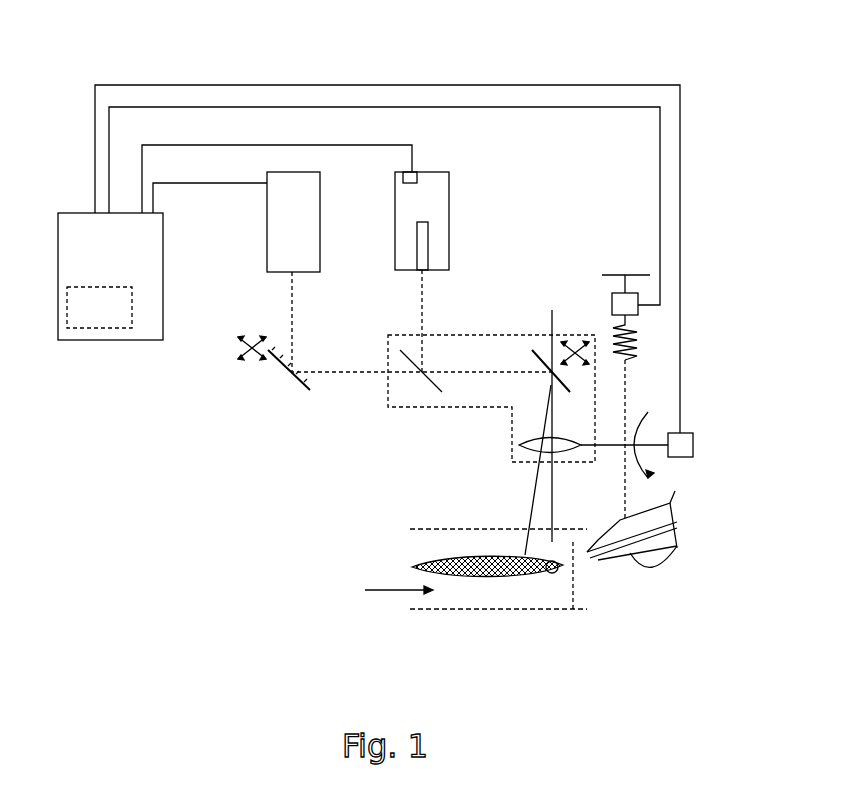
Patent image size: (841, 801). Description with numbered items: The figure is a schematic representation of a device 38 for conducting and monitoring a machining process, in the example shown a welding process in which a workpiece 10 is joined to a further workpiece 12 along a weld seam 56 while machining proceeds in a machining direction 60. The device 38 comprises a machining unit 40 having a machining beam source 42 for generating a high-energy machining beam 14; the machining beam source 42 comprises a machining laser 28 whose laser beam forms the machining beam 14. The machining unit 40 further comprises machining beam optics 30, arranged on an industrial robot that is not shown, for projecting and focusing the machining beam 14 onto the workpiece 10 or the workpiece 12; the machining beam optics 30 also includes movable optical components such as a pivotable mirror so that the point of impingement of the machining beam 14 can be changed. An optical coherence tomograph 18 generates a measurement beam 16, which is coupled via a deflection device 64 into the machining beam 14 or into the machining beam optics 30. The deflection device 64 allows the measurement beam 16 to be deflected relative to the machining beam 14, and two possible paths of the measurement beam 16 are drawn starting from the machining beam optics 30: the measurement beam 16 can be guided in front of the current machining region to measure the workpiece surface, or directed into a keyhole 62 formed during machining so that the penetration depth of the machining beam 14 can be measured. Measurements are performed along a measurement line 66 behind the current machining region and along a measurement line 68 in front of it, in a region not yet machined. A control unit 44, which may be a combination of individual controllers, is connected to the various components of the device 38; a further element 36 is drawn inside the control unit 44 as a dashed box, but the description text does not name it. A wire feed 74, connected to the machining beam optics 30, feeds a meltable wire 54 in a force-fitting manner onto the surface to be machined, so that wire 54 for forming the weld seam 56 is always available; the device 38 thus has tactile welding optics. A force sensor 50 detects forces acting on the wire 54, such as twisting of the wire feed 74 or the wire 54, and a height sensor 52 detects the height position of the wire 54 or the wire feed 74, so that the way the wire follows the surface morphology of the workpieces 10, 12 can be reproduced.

The workpiece 10 is at (492, 580).
The further workpiece 12 is at (450, 543).
The machining beam 14 is at (422, 307).
The measurement beam 16 is at (292, 312).
The optical coherence tomograph 18 is at (278, 181).
The machining laser 28 is at (428, 225).
The machining beam optics 30 is at (596, 403).
The memory unit 36 is at (100, 328).
The device 38 is at (249, 487).
The machining unit 40 is at (618, 163).
The machining beam source 42 is at (449, 245).
The control unit 44 is at (82, 233).
The force sensor 50 is at (694, 440).
The height sensor 52 is at (640, 310).
The wire 54 is at (582, 565).
The weld seam 56 is at (478, 580).
The machining direction 60 is at (372, 590).
The keyhole 62 is at (555, 575).
The deflection device 64 is at (298, 395).
The measurement line 66 is at (520, 580).
The measurement line 68 is at (568, 550).
The wire feed 74 is at (677, 548).